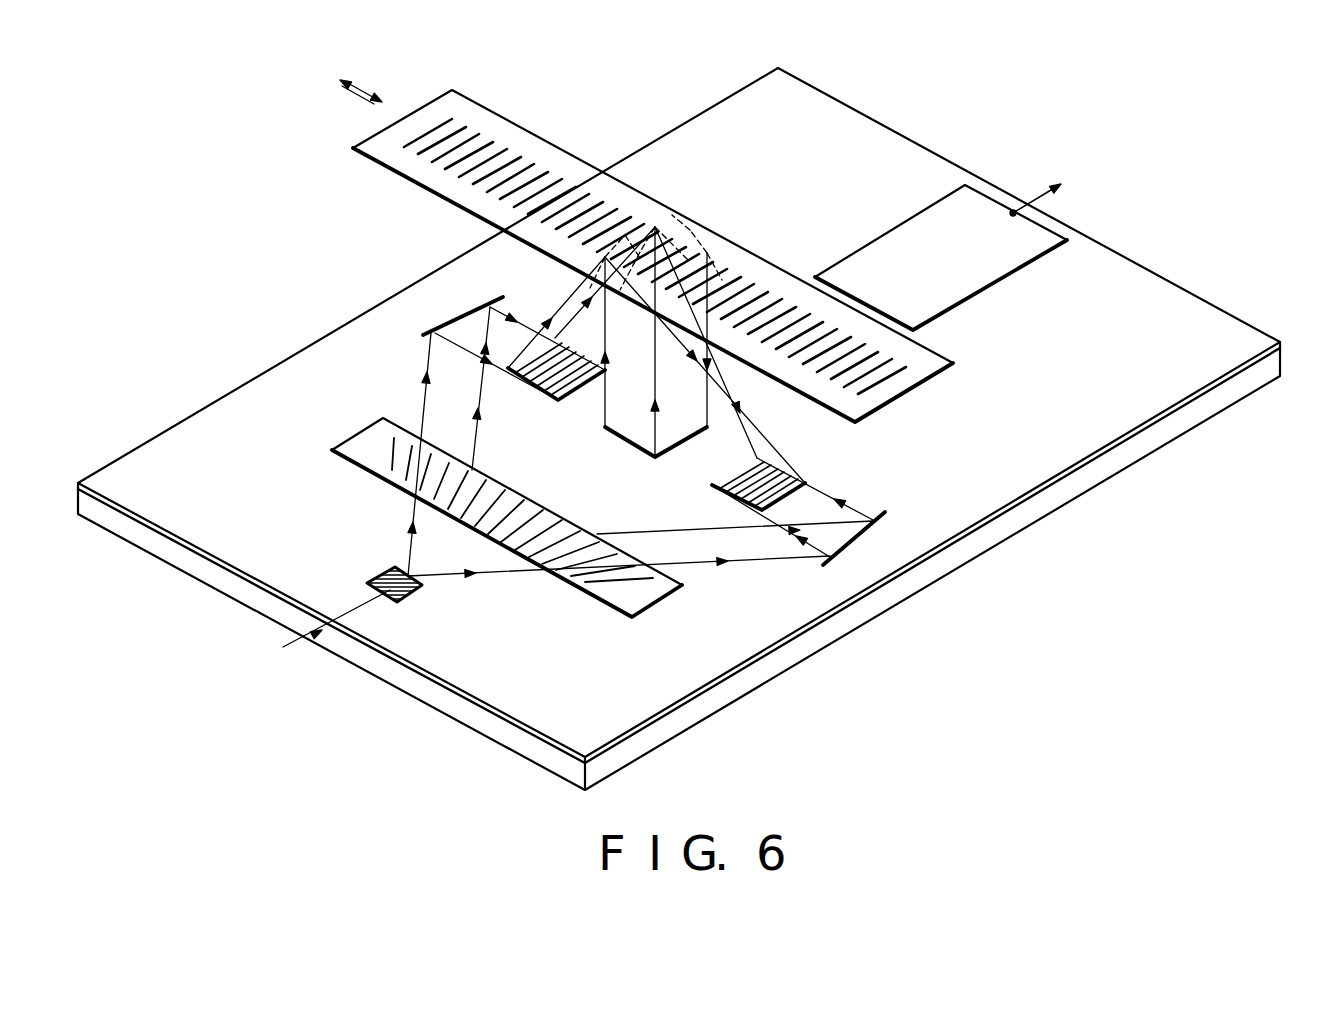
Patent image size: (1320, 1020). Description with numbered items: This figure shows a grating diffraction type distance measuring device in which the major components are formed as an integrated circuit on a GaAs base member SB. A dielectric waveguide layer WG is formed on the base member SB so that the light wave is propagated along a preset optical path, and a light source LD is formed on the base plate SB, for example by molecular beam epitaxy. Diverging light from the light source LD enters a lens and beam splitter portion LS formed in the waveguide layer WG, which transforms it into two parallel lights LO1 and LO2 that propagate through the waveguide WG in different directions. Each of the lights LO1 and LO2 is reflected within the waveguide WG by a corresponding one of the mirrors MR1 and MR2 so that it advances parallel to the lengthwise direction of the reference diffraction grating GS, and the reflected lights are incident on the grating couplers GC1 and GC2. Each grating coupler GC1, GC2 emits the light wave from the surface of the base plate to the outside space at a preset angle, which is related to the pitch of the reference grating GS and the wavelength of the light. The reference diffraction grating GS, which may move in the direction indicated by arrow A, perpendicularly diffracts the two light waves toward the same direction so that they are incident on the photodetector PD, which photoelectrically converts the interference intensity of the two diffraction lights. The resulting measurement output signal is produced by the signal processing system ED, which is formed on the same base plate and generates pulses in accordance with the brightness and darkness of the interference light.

The GaAs base member SB is at (940, 568).
The dielectric waveguide layer WG is at (818, 624).
The reference diffraction grating GS is at (903, 386).
The direction of scale movement A is at (361, 84).
The signal processing system (electronic detector) ED is at (993, 282).
The lens and beam splitter portion LS is at (662, 590).
The light source LD is at (424, 592).
The parallel light LO1 is at (762, 555).
The parallel light LO2 is at (430, 374).
The mirror MR1 is at (452, 318).
The mirror MR2 is at (866, 528).
The grating coupler GC1 is at (512, 386).
The grating coupler GC2 is at (716, 492).
The photodetector PD is at (618, 436).